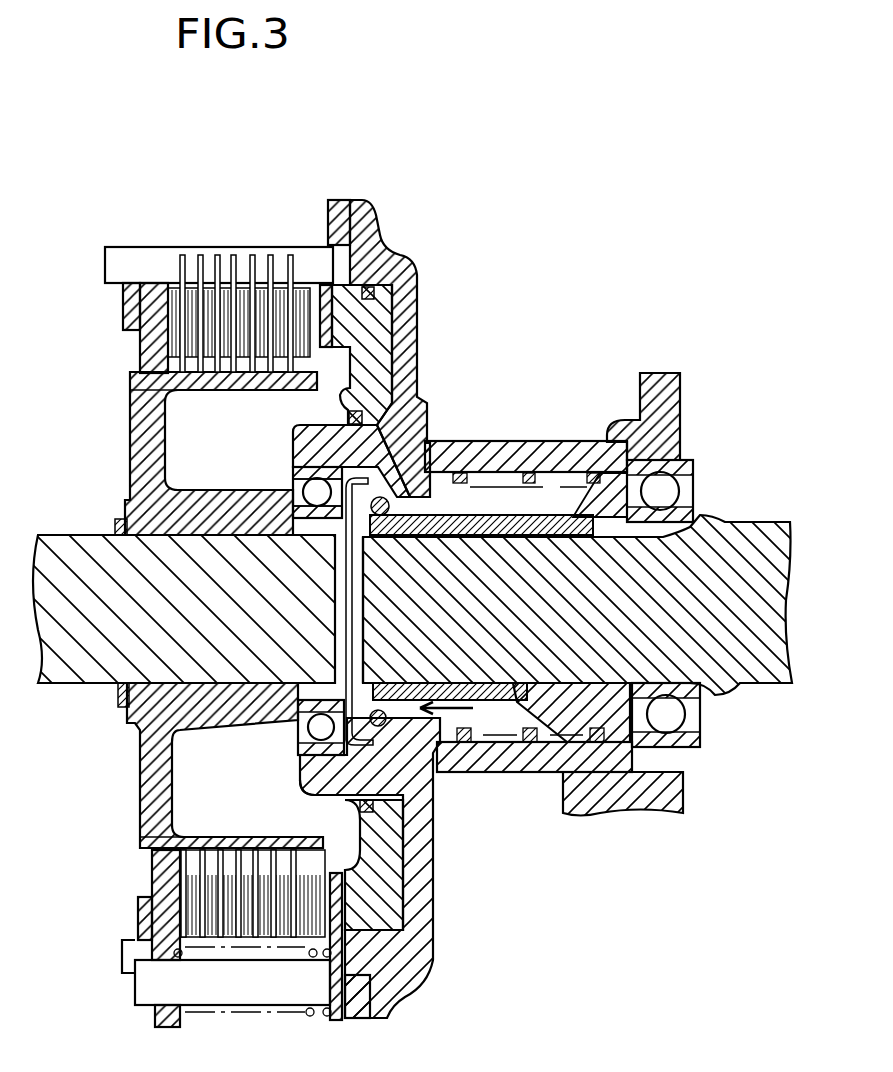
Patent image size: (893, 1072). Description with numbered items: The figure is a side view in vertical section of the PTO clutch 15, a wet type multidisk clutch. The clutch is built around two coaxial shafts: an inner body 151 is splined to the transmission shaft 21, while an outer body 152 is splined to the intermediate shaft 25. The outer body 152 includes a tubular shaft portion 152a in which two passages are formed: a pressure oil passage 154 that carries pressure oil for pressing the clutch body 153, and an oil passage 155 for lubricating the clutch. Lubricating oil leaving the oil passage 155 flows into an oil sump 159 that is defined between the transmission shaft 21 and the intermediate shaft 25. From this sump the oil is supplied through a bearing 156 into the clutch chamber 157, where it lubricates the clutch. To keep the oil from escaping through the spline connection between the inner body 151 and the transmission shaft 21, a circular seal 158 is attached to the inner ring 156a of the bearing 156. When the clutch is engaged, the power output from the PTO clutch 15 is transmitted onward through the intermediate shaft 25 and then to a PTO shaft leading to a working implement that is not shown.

The PTO clutch 15 is at (363, 581).
The transmission shaft 21 is at (61, 542).
The intermediate shaft 25 is at (747, 528).
The inner body 151 is at (143, 403).
The outer body 152 is at (417, 275).
The tubular shaft portion 152a is at (572, 717).
The clutch body 153 is at (378, 362).
The pressure oil passage 154 is at (490, 508).
The oil passage 155 is at (453, 760).
The bearing 156 is at (317, 452).
The inner ring 156a is at (295, 497).
The clutch chamber 157 is at (254, 787).
The circular seal 158 is at (353, 587).
The oil sump 159 is at (377, 641).